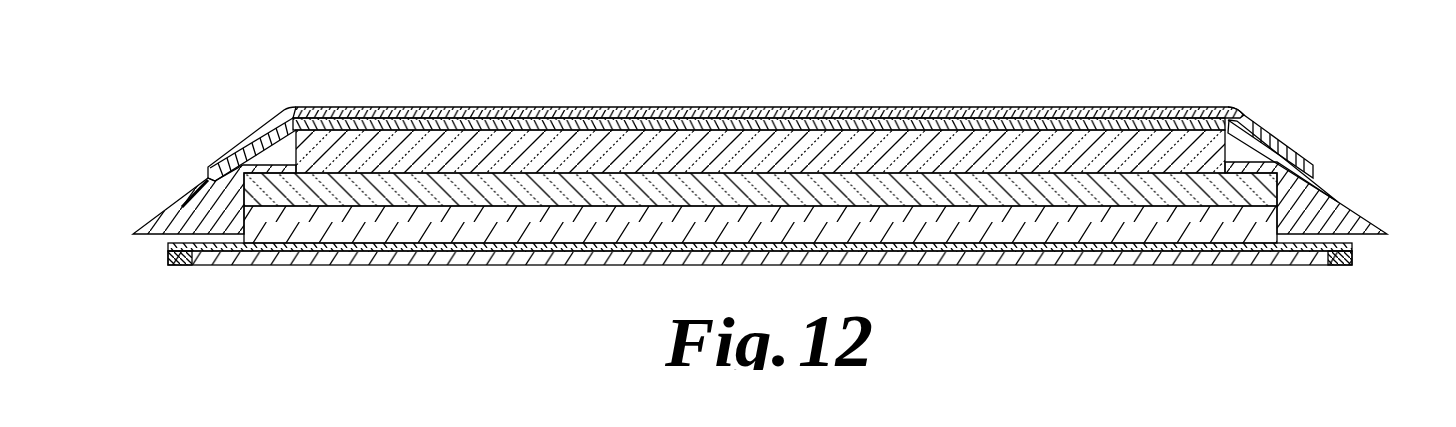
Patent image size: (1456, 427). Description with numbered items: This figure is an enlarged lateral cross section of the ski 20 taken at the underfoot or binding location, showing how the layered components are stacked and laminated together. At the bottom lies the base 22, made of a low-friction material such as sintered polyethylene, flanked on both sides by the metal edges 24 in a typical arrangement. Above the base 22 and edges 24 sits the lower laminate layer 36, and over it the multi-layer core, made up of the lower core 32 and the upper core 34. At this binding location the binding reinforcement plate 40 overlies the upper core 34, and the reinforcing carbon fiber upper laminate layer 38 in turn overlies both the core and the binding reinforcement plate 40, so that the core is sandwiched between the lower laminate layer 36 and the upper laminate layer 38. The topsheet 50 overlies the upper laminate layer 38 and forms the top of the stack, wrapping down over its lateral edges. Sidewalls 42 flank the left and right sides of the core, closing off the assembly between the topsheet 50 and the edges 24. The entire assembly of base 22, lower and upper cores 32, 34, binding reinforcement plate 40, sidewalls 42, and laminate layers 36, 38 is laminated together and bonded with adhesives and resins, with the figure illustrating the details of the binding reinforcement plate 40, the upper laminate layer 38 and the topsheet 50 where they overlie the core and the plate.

The ski 20 is at (999, 59).
The base 22 is at (1243, 258).
The metal edges 24 is at (173, 257).
The lower core 32 is at (1122, 225).
The upper core 34 is at (1040, 188).
The lower laminate layer 36 is at (1183, 247).
The upper laminate layer 38 is at (1183, 127).
The binding reinforcement plate 40 is at (1115, 147).
The sidewalls 42 is at (185, 214).
The topsheet 50 is at (1257, 136).